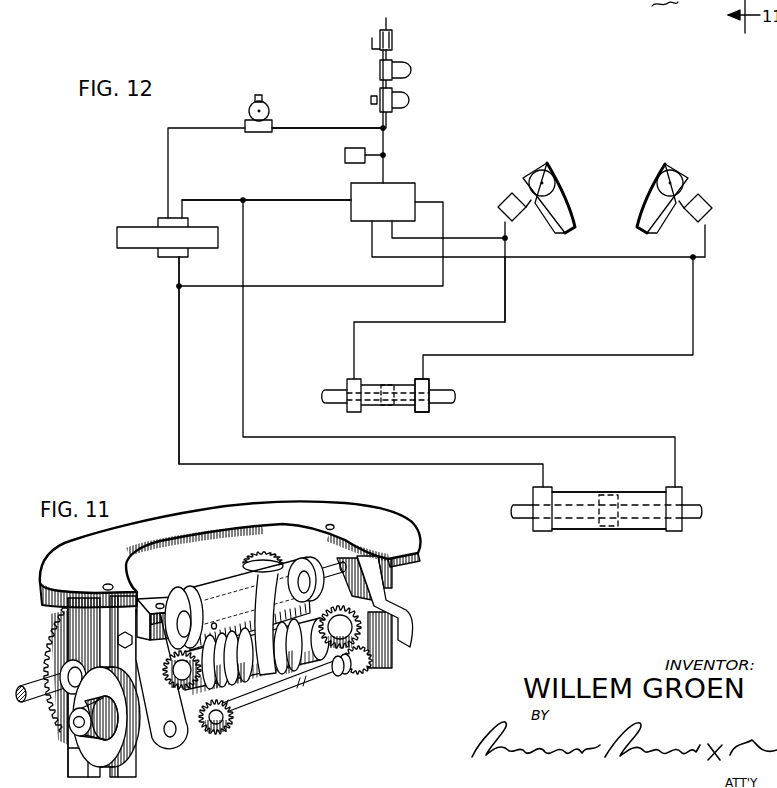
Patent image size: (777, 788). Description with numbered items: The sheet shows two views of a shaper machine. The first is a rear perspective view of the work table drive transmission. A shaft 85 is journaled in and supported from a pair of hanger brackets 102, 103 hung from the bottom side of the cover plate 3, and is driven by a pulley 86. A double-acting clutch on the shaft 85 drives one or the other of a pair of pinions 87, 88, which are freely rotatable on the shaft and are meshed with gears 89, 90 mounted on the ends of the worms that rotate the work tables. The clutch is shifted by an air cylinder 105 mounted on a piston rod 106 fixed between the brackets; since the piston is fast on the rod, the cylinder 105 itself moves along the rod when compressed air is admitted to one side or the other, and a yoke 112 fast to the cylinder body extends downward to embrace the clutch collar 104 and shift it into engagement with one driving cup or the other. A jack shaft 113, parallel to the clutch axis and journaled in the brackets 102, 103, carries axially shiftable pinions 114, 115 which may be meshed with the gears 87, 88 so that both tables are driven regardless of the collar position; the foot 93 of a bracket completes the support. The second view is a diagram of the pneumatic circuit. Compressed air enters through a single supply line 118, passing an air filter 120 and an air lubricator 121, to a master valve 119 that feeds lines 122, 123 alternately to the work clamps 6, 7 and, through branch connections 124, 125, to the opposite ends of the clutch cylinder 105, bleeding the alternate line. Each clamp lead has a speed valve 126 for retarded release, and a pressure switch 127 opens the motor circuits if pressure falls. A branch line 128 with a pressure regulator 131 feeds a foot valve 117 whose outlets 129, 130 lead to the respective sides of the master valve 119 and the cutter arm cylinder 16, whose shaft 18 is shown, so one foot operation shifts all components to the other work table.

In FIG. 11, the cover plate 3 is at (163, 525).
In FIG. 12, the work clamp 6 is at (555, 193).
In FIG. 12, the work clamp 7 is at (651, 195).
In FIG. 12, the double acting air cylinder 16 is at (578, 526).
In FIG. 12, the spool shaft 18 is at (693, 510).
In FIG. 11, the shaft 85 is at (67, 736).
In FIG. 11, the pulley 86 is at (102, 752).
In FIG. 11, the pinion 87 is at (363, 617).
In FIG. 11, the pinion 88 is at (245, 710).
In FIG. 11, the gear 89 is at (262, 558).
In FIG. 11, the gear 90 is at (56, 624).
In FIG. 11, the pillar 93 is at (137, 772).
In FIG. 11, the hanger bracket 102 is at (378, 587).
In FIG. 11, the hanger bracket 103 is at (157, 736).
In FIG. 11, the clutch collar 104 is at (288, 677).
In FIG. 12, the air cylinder 105 is at (371, 380).
In FIG. 11, the air cylinder 105 is at (217, 588).
In FIG. 12, the piston rod 106 is at (445, 391).
In FIG. 11, the piston rod 106 is at (308, 559).
In FIG. 11, the yoke 112 is at (250, 603).
In FIG. 11, the jack shaft 113 is at (330, 678).
In FIG. 11, the pinion 114 is at (378, 667).
In FIG. 11, the pinion 115 is at (220, 740).
In FIG. 12, the foot valve 117 is at (148, 228).
In FIG. 12, the supply line 118 is at (395, 30).
In FIG. 12, the master valve 119 is at (412, 190).
In FIG. 12, the air filter 120 is at (412, 71).
In FIG. 12, the air lubricator 121 is at (412, 97).
In FIG. 12, the line 122 is at (453, 235).
In FIG. 12, the line 123 is at (386, 258).
In FIG. 12, the branch connection 124 is at (508, 287).
In FIG. 12, the branch connection 125 is at (574, 355).
In FIG. 12, the speed valve 126 is at (723, 201).
In FIG. 12, the pressure switch 127 is at (345, 160).
In FIG. 12, the branch line 128 is at (296, 127).
In FIG. 12, the outlet 129 is at (209, 197).
In FIG. 12, the outlet 130 is at (178, 271).
In FIG. 12, the pressure regulator 131 is at (250, 106).